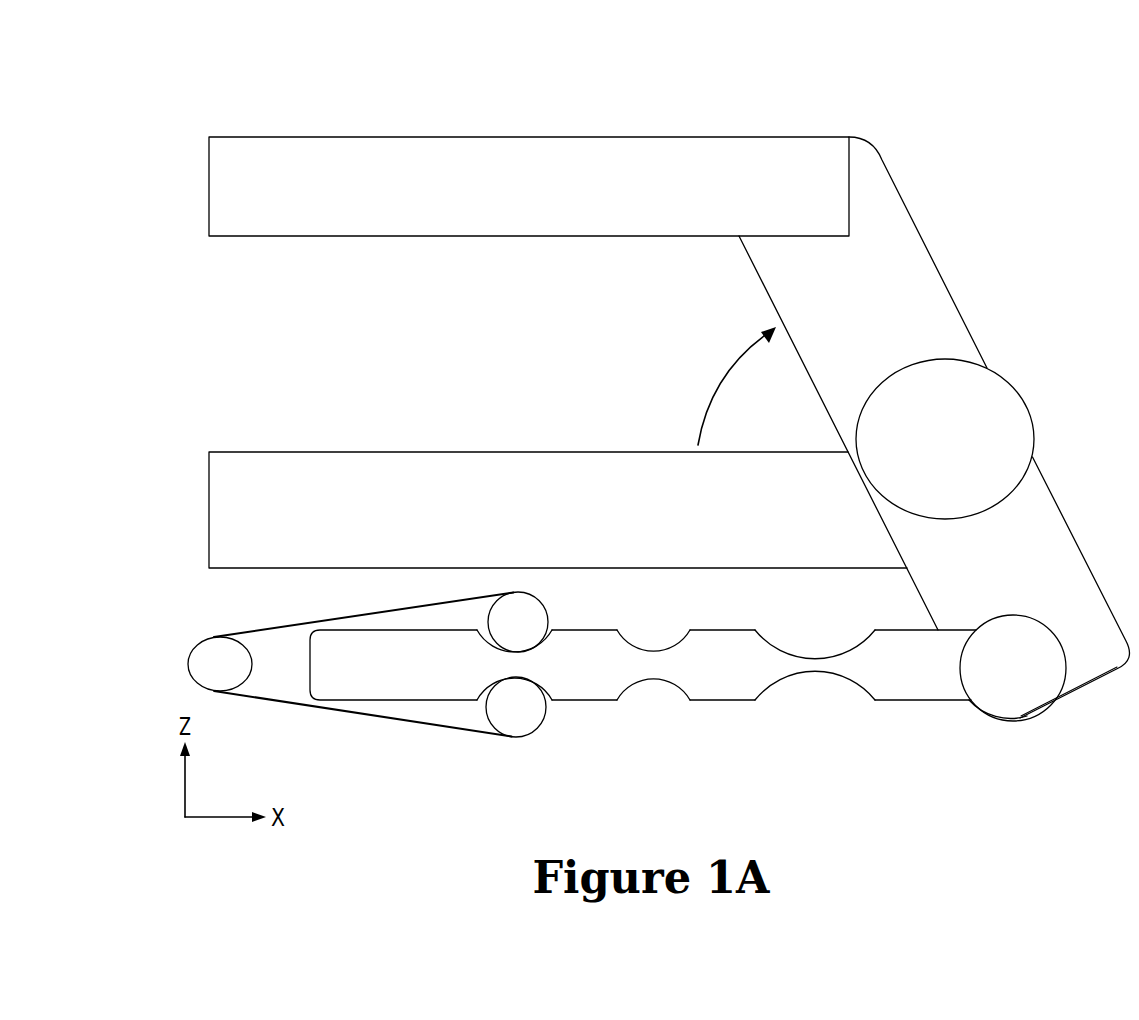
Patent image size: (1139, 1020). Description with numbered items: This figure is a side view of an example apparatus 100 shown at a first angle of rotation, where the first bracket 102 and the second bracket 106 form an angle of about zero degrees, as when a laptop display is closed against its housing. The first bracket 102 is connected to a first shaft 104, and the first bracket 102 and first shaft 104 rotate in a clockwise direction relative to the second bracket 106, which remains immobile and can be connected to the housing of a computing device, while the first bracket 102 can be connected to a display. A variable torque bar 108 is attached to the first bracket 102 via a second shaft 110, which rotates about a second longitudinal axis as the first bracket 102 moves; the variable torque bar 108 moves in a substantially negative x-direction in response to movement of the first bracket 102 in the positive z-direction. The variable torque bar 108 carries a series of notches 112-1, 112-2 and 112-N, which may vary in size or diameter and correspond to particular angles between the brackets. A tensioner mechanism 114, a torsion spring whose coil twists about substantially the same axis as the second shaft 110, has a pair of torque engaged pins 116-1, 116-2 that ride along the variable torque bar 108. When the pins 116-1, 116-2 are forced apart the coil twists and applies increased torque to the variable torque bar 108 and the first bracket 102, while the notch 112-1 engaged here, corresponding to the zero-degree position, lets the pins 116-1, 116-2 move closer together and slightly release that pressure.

The apparatus 100 is at (300, 78).
The first bracket 102 is at (659, 187).
The first shaft 104 is at (983, 428).
The second bracket 106 is at (503, 480).
The variable torque bar 108 is at (385, 672).
The second shaft 110 is at (1020, 678).
The notch 112-1 is at (547, 703).
The notch 112-2 is at (652, 690).
The notch 112-N is at (812, 685).
The tensioner mechanism 114 is at (285, 626).
The torque engaged pin 116-1 is at (520, 713).
The torque engaged pin 116-2 is at (525, 620).